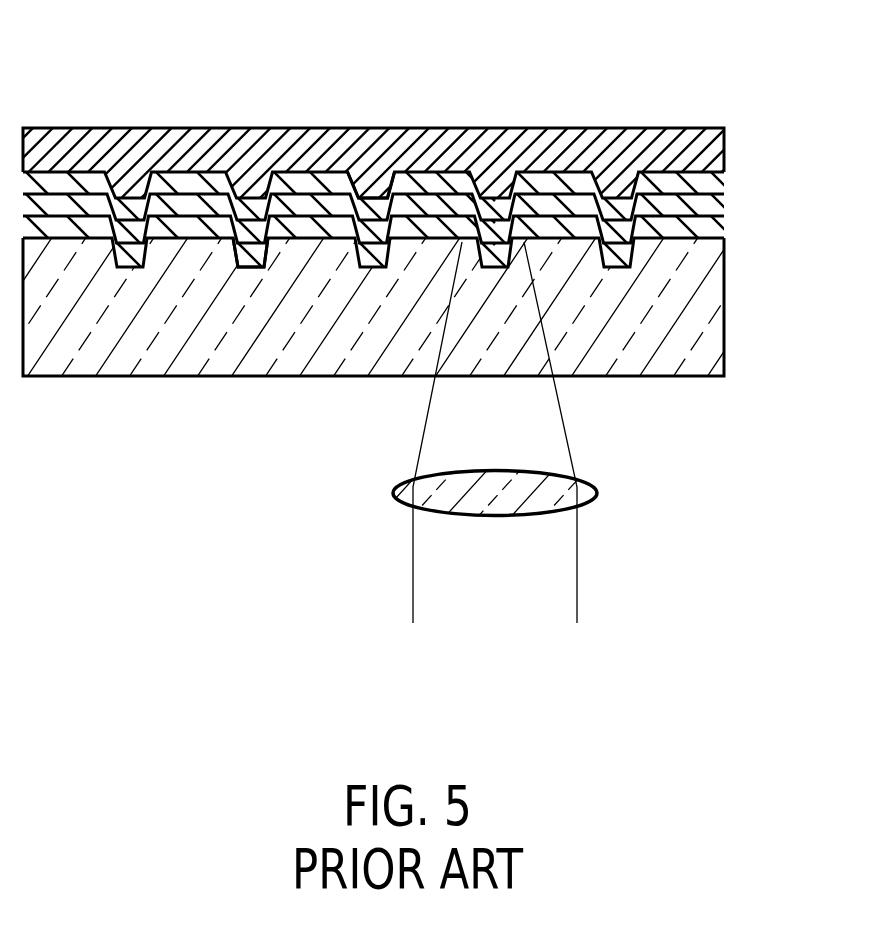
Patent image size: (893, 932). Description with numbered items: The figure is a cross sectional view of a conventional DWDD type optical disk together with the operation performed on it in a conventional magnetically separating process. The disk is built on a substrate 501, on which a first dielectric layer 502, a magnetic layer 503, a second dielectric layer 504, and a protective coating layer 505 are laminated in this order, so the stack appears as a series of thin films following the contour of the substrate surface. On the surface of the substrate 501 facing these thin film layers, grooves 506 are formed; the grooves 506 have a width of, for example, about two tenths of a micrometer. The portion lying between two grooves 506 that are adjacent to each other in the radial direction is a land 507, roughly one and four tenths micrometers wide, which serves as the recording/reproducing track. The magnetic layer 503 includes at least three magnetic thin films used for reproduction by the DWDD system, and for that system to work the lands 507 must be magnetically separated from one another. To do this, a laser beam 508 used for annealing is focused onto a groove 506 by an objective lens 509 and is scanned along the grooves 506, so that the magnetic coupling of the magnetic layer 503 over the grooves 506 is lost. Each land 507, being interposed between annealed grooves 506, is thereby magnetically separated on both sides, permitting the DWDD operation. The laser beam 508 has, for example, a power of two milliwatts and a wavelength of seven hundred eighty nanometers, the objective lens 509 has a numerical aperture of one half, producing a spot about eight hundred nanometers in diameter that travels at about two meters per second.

The substrate 501 is at (708, 290).
The first dielectric layer 502 is at (727, 225).
The magnetic layer 503 is at (727, 205).
The second dielectric layer 504 is at (727, 182).
The protective coating layer 505 is at (727, 148).
The groove 506 is at (253, 268).
The land 507 is at (317, 157).
The laser beam 508 is at (578, 557).
The objective lens 509 is at (597, 493).